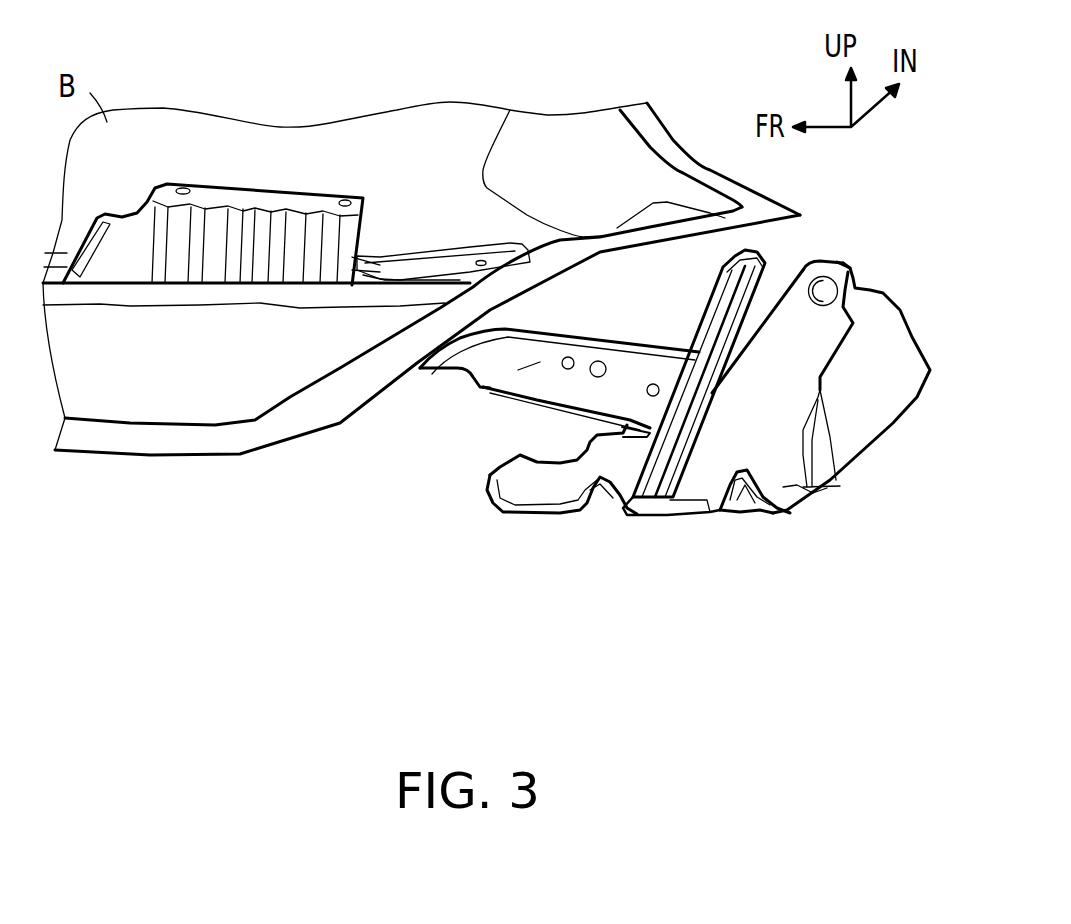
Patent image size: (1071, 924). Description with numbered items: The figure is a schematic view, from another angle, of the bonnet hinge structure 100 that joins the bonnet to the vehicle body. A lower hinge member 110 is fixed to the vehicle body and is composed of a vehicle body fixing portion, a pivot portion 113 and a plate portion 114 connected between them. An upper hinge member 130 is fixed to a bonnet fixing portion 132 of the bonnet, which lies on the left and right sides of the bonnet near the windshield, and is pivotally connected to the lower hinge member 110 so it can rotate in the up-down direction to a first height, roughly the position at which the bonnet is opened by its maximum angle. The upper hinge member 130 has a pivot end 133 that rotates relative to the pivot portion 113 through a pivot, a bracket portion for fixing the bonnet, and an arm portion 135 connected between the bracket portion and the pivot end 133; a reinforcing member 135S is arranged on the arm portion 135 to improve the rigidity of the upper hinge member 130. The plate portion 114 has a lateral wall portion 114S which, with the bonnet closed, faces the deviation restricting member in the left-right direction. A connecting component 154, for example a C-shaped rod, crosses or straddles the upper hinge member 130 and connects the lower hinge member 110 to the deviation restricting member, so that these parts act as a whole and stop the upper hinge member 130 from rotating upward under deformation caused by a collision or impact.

The bonnet hinge structure 100 is at (902, 614).
The lower hinge member 110 is at (503, 480).
The pivot portion 113 is at (816, 263).
The plate portion 114 is at (780, 451).
The lateral wall portion 114S is at (701, 510).
The upper hinge member 130 is at (518, 370).
The bonnet fixing portion 132 is at (392, 250).
The pivot end 133 is at (845, 266).
The arm portion 135 is at (620, 345).
The reinforcing member 135S is at (467, 365).
The connecting component 154 is at (630, 512).